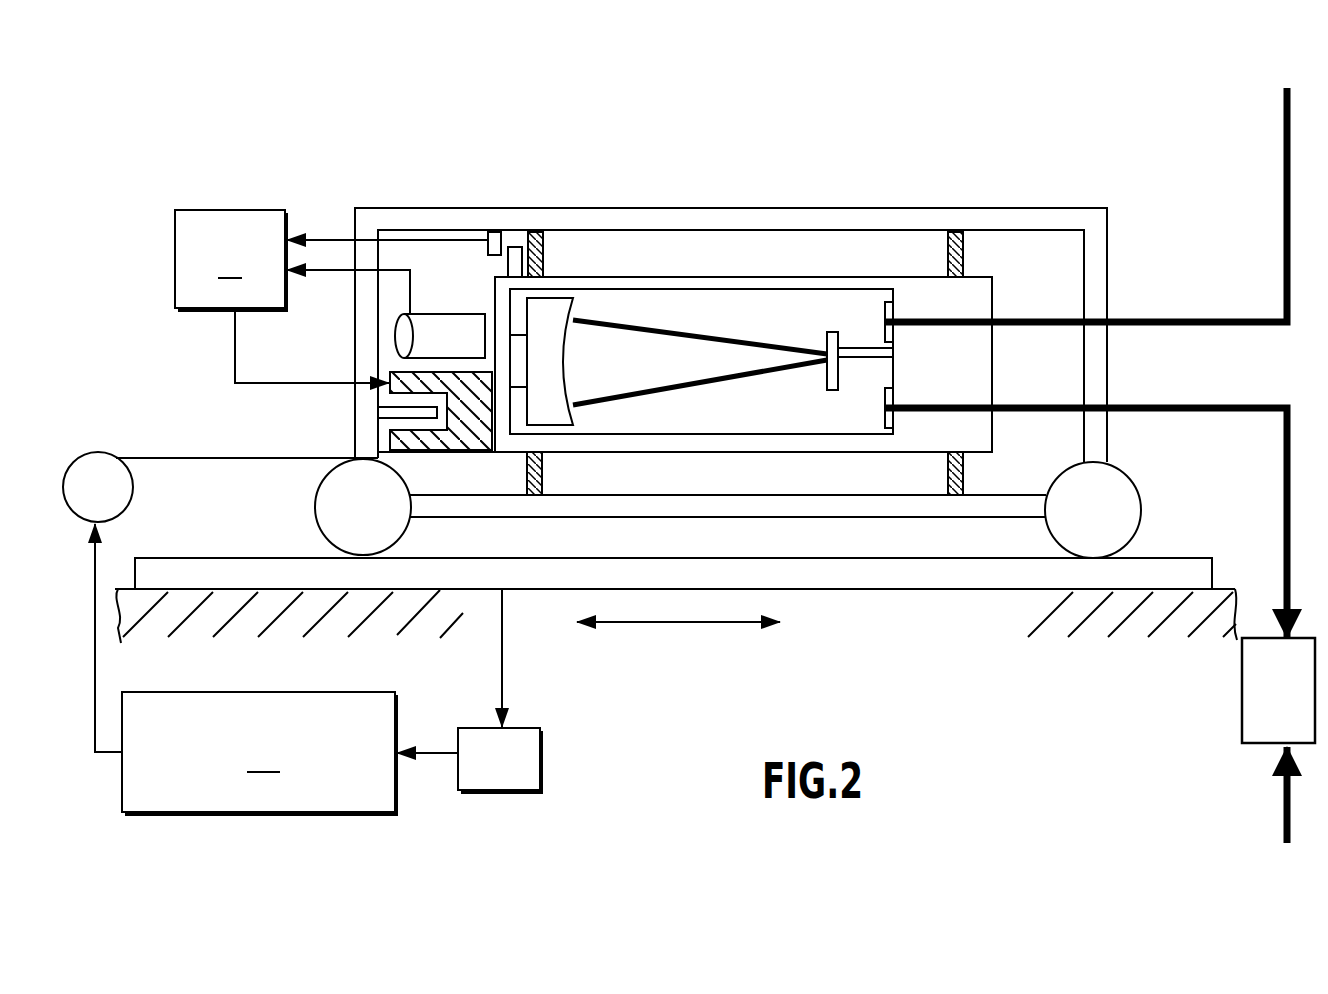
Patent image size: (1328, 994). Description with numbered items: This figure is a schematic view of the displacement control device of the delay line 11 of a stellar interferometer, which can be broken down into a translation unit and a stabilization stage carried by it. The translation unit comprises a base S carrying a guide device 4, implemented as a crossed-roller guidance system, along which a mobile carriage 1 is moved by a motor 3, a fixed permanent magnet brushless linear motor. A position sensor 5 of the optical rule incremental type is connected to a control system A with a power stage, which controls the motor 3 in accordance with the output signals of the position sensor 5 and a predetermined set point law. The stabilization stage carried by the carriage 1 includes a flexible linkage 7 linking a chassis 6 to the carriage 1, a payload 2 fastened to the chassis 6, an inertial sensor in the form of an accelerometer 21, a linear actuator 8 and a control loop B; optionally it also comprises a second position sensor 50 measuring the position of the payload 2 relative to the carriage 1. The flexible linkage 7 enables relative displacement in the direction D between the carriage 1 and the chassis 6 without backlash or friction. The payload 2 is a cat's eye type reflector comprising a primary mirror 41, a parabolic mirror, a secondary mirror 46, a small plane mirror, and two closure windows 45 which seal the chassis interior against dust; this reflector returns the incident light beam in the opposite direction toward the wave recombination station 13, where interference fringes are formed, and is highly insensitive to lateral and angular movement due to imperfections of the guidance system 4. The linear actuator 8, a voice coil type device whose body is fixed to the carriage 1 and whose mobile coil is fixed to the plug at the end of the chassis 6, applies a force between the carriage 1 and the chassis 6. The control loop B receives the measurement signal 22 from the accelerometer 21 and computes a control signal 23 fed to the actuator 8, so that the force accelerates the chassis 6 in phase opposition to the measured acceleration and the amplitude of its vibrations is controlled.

The mobile carriage 1 is at (352, 425).
The payload 2 is at (692, 312).
The motor 3 is at (101, 477).
The guide device 4 is at (957, 570).
The position sensor 5 is at (496, 732).
The chassis 6 is at (978, 305).
The flexible linkage 7 is at (548, 250).
The linear actuator 8 is at (483, 408).
The delay line 11 is at (1093, 164).
The wave recombination station 13 is at (1267, 683).
The accelerometer 21 is at (455, 340).
The measurement signal 22 is at (327, 267).
The control signal 23 is at (234, 373).
The primary mirror 41 is at (573, 303).
The closure windows 45 is at (888, 300).
The secondary mirror 46 is at (893, 348).
The second position sensor 50 is at (497, 232).
The control system A is at (259, 781).
The control loop B is at (166, 260).
The base S is at (1114, 608).
The direction D is at (678, 643).